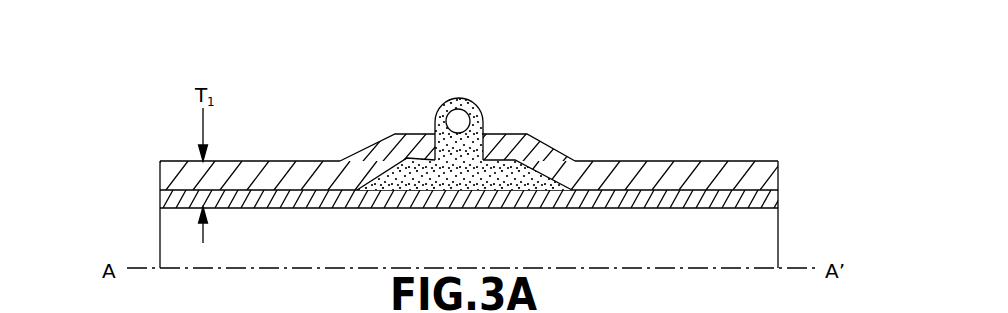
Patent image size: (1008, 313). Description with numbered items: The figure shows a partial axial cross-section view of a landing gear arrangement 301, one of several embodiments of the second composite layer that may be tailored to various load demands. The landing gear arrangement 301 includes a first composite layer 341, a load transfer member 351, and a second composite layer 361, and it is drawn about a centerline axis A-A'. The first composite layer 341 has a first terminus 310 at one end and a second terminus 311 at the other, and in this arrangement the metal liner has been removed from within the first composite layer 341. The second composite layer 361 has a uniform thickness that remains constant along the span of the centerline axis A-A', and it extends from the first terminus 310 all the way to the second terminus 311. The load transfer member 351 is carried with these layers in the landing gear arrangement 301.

The landing gear arrangement 301 is at (710, 72).
The first terminus 310 is at (118, 228).
The second terminus 311 is at (800, 230).
The first composite layer 341 is at (318, 203).
The load transfer member 351 is at (454, 100).
The second composite layer 361 is at (617, 180).